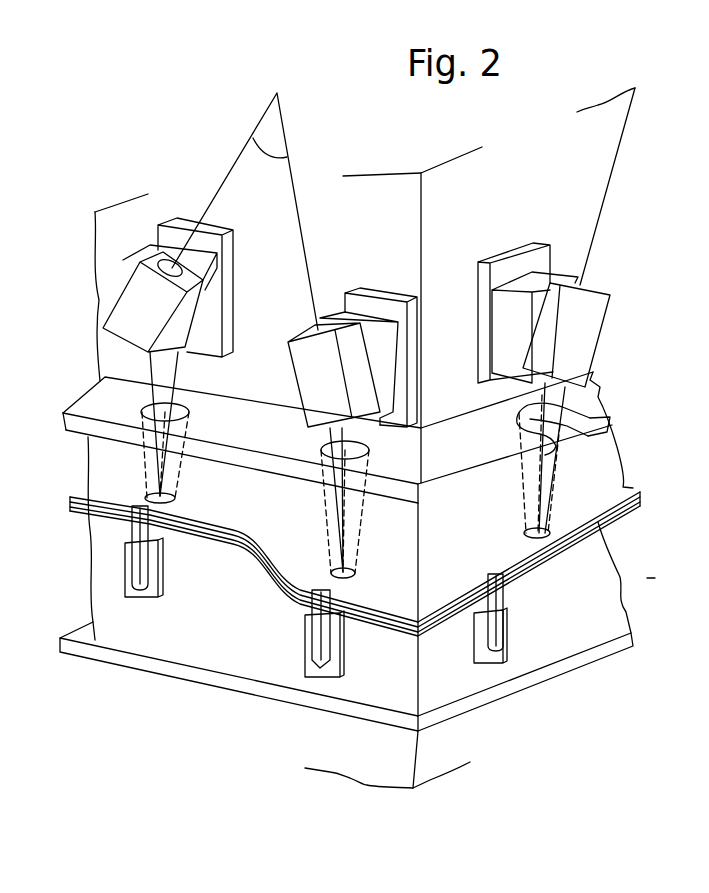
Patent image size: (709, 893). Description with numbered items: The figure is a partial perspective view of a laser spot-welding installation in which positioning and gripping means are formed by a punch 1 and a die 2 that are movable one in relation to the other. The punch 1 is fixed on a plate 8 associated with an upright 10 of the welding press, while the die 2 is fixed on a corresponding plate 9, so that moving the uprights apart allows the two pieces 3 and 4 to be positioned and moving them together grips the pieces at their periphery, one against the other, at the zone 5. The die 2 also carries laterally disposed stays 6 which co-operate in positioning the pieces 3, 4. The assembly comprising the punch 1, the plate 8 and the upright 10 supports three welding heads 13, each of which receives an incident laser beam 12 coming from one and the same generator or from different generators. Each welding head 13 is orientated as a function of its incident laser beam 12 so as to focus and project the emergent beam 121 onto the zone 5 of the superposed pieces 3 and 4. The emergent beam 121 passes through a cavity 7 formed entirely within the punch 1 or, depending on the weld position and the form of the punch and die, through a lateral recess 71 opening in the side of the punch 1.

The punch 1 is at (600, 474).
The die 2 is at (580, 617).
The piece 3 is at (230, 535).
The piece 4 is at (283, 600).
The zone 5 is at (661, 571).
The stays 6 is at (140, 567).
The cavity 7 is at (323, 518).
The lateral recess 71 is at (555, 497).
The plate 8 is at (607, 427).
The plate 9 is at (490, 700).
The upright 10 is at (463, 213).
The laser beam 12 is at (262, 127).
The emergent laser beam 121 is at (370, 447).
The welding head 13 is at (133, 307).